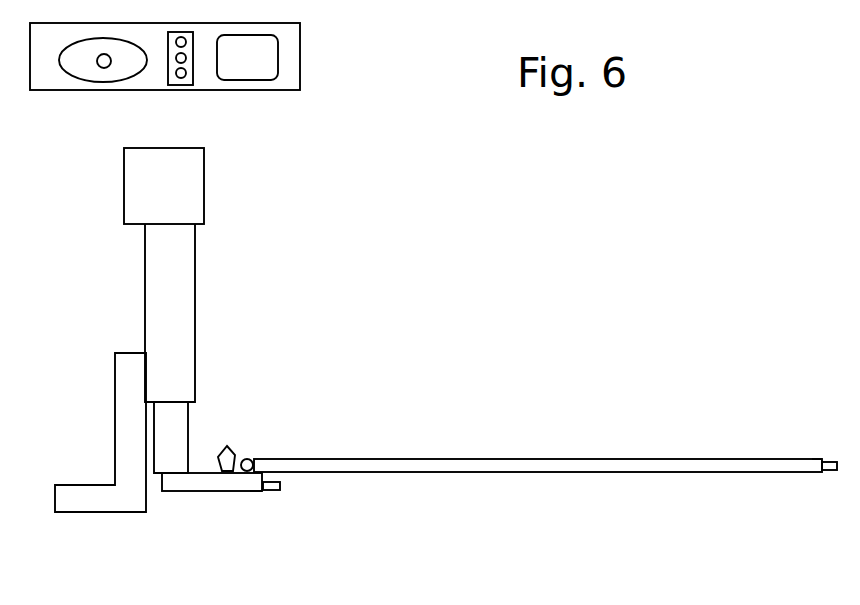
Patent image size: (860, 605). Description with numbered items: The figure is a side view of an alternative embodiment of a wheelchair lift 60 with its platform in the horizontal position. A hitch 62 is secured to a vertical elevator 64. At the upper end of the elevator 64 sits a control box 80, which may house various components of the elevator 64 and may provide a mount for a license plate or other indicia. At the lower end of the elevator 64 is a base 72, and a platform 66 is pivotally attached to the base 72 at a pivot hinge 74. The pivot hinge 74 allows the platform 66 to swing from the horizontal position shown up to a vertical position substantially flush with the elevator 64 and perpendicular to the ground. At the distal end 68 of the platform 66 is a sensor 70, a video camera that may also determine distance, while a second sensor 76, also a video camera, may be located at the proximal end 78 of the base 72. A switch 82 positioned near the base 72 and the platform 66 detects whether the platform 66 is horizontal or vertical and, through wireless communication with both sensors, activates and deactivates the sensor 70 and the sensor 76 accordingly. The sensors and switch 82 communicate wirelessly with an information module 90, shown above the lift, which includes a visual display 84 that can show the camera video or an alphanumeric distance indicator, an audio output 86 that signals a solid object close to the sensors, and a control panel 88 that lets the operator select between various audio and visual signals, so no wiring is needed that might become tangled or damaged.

The wheelchair lift 60 is at (550, 268).
The hitch 62 is at (120, 512).
The elevator 64 is at (145, 290).
The platform 66 is at (613, 473).
The distal end 68 is at (820, 460).
The sensor 70 is at (830, 470).
The base 72 is at (199, 491).
The pivot hinge 74 is at (252, 458).
The sensor 76 is at (280, 487).
The proximal end 78 is at (255, 491).
The control box 80 is at (204, 185).
The switch 82 is at (228, 445).
The visual display 84 is at (278, 68).
The audio output 86 is at (82, 78).
The control panel 88 is at (168, 82).
The information module 90 is at (215, 97).